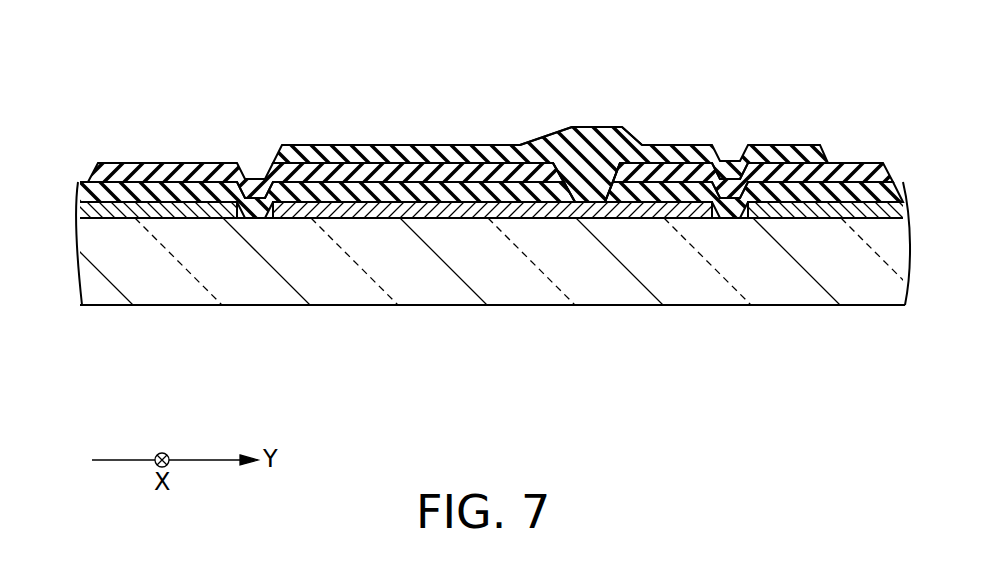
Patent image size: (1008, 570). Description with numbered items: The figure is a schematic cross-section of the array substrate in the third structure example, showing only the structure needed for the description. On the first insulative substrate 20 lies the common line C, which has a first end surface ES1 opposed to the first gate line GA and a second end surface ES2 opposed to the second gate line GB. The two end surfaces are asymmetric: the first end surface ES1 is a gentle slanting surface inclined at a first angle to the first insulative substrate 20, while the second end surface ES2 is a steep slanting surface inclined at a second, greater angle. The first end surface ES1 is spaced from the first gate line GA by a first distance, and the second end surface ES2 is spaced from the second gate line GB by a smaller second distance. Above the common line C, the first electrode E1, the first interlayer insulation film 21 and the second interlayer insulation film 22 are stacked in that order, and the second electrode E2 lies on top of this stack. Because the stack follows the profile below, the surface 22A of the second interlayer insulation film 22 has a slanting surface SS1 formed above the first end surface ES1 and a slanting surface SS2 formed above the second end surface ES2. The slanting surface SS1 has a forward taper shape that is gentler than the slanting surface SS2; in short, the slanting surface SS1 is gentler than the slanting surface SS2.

The first insulative substrate 20 is at (80, 259).
The first interlayer insulation film 21 is at (469, 276).
The second interlayer insulation film 22 is at (78, 186).
The surface of the second interlayer insulation film 22A is at (388, 146).
The first electrode E1 is at (320, 218).
The second electrode E2 is at (485, 142).
The first gate line GA is at (162, 218).
The second gate line GB is at (843, 218).
The slanting surface SS1 is at (536, 143).
The slanting surface SS2 is at (635, 140).
The first end surface ES1 is at (563, 186).
The second end surface ES2 is at (614, 206).
The common line C is at (588, 208).